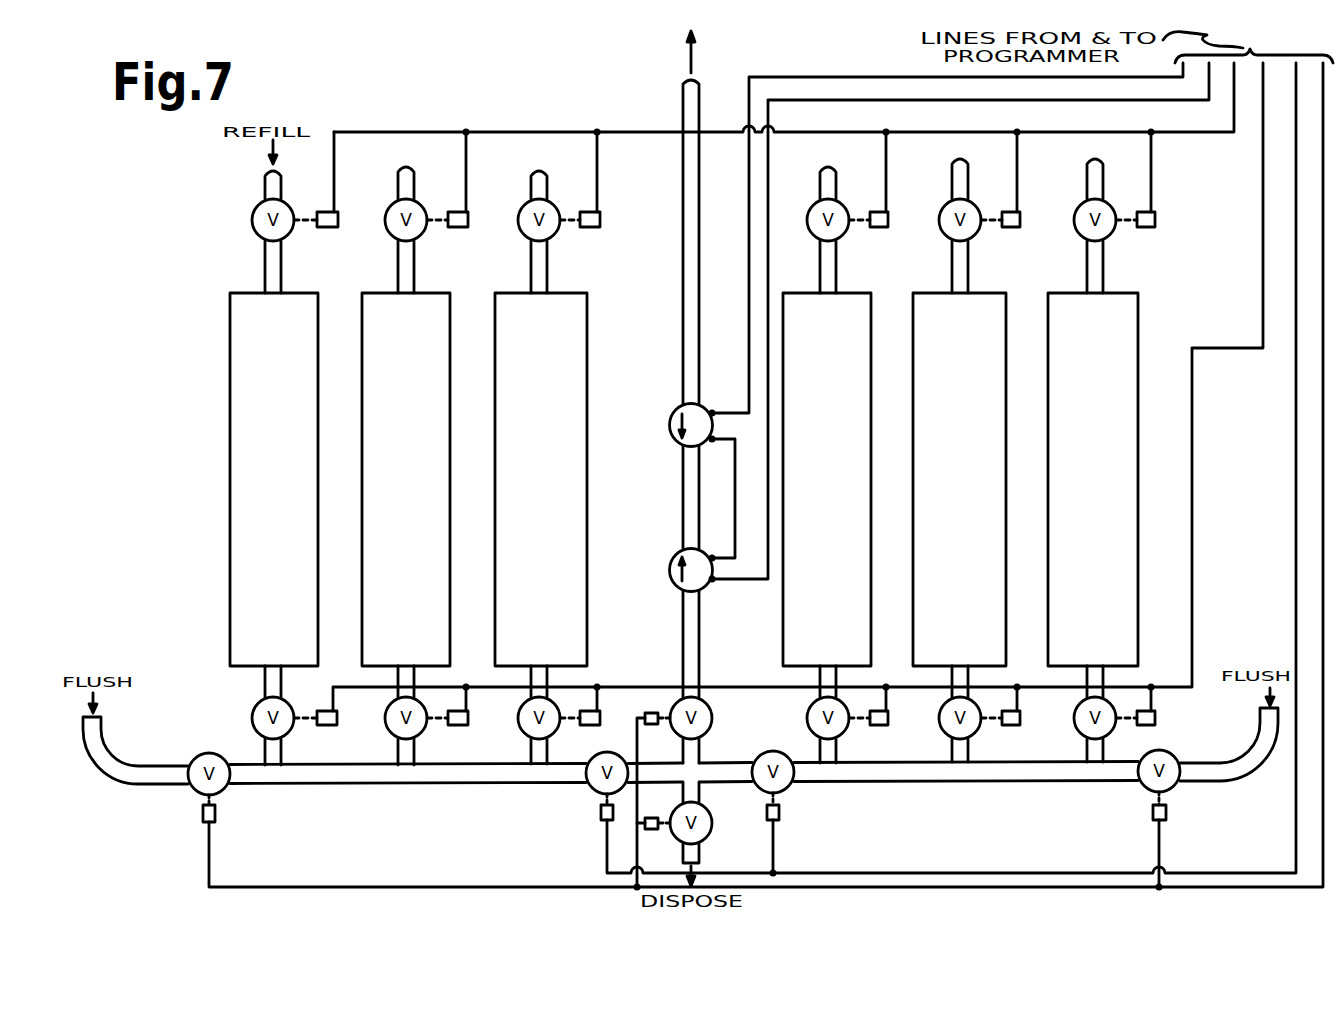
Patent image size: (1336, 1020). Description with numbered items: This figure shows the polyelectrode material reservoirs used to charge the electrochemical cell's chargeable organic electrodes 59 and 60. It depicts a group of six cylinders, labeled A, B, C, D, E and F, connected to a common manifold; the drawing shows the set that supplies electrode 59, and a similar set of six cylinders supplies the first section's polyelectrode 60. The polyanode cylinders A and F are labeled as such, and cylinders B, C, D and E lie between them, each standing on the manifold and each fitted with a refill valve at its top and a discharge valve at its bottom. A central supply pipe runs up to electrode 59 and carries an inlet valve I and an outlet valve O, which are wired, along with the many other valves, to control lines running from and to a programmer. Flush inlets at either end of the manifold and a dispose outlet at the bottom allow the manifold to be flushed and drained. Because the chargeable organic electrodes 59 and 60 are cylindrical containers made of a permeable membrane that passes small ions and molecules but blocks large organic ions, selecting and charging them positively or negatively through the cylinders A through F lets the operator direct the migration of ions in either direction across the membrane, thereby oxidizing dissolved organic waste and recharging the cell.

The chargeable organic electrode 59 is at (690, 72).
The chargeable organic electrode 60 is at (553, 313).
The polyanode tank A is at (274, 479).
The polyanode tank B is at (406, 479).
The polyanode tank C is at (541, 479).
The polyanode tank D is at (827, 479).
The polyanode tank E is at (959, 479).
The polyanode tank F is at (1093, 479).
The inlet valve I is at (691, 425).
The outlet valve O is at (691, 570).